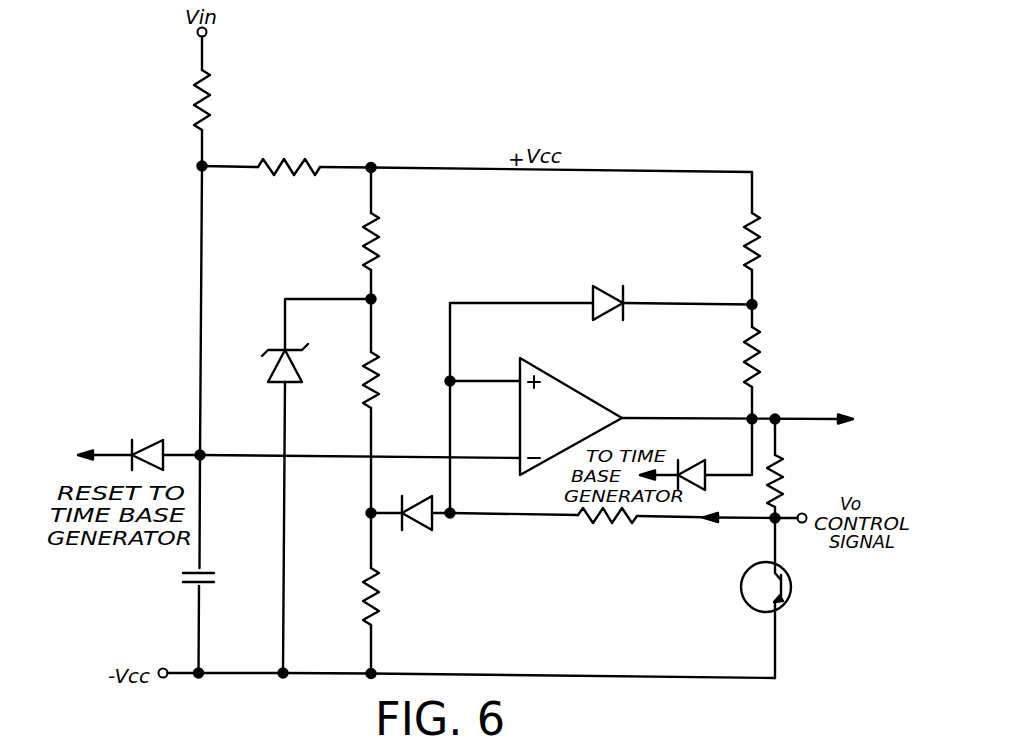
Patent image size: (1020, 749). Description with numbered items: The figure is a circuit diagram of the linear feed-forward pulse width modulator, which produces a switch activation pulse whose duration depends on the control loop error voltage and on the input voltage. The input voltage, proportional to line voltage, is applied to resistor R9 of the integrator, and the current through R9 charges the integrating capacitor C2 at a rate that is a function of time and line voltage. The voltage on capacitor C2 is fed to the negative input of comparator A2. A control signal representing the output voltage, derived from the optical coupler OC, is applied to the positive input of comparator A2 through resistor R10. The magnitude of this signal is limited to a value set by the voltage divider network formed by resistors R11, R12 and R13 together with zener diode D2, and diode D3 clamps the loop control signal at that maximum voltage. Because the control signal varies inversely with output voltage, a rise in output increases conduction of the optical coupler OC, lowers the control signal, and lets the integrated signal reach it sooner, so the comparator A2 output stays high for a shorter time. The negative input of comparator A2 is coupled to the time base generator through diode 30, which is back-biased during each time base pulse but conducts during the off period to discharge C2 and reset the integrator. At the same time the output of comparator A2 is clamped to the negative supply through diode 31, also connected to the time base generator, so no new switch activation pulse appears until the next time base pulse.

The diode 30 is at (155, 441).
The diode 31 is at (700, 483).
The resistor R9 is at (181, 97).
The resistor R10 is at (612, 531).
The resistor R11 is at (392, 234).
The resistor R12 is at (392, 406).
The resistor R13 is at (392, 593).
The zener diode D2 is at (301, 486).
The diode D3 is at (410, 525).
The integrating capacitor C2 is at (180, 583).
The comparator A2 is at (585, 394).
The optical coupler OC is at (785, 620).